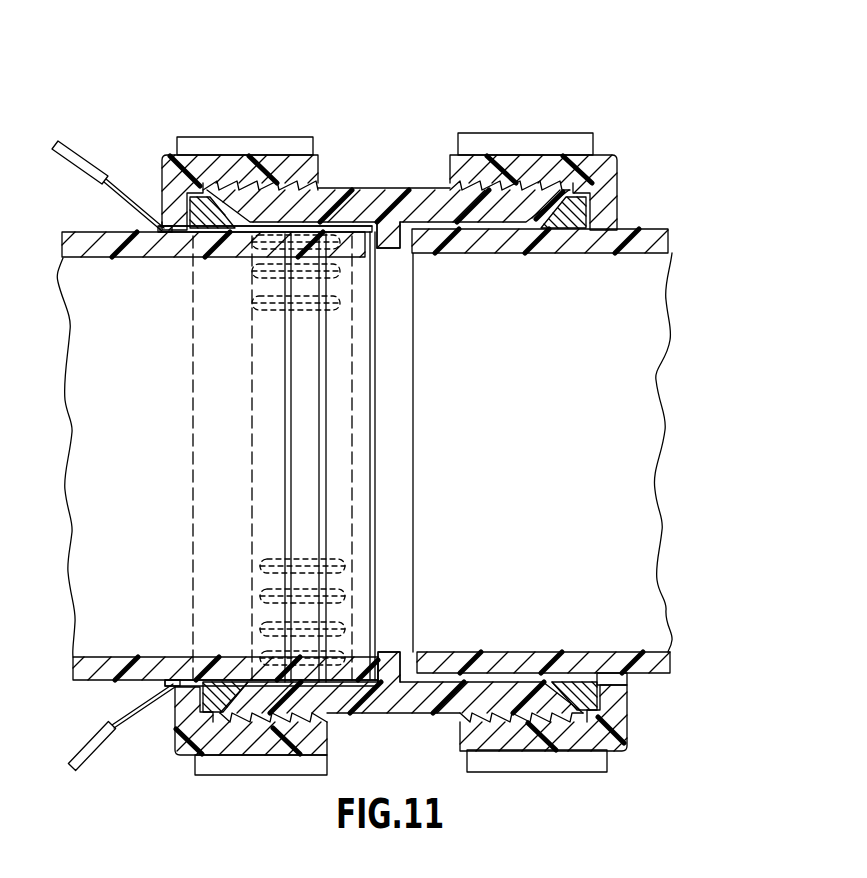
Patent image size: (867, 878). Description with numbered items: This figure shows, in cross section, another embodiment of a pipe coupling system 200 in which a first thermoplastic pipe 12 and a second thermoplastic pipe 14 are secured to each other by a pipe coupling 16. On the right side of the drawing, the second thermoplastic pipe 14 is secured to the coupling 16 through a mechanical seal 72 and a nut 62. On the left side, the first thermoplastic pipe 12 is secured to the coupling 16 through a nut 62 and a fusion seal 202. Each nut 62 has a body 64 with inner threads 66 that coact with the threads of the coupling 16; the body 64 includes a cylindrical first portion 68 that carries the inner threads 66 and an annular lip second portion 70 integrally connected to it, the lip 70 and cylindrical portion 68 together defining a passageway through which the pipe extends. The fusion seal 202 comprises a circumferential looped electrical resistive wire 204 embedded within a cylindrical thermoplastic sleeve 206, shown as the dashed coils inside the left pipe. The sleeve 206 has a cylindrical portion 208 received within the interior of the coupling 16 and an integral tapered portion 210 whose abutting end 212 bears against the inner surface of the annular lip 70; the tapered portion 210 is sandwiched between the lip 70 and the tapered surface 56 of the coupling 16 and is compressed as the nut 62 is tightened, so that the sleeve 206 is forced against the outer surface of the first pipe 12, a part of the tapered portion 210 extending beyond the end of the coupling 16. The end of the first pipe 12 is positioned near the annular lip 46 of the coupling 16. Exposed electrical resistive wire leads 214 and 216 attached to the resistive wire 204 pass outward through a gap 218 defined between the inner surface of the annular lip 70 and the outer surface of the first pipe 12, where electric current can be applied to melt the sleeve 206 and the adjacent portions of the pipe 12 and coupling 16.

The pipe coupling system 200 is at (243, 82).
The first thermoplastic pipe 12 is at (78, 232).
The second thermoplastic pipe 14 is at (648, 229).
The pipe coupling 16 is at (390, 187).
The annular lip 46 is at (392, 250).
The tapered surface 56 is at (232, 230).
The nut 62 is at (297, 137).
The body 64 is at (247, 137).
The inner threads 66 is at (314, 184).
The cylindrical first portion 68 is at (163, 158).
The annular lip second portion 70 is at (158, 206).
The mechanical seal 72 is at (612, 158).
The fusion seal 202 is at (213, 680).
The electrical resistive wire 204 is at (358, 580).
The cylindrical thermoplastic sleeve 206 is at (358, 645).
The cylindrical portion 208 is at (358, 612).
The tapered portion 210 is at (200, 220).
The abutting end 212 is at (175, 712).
The electrical resistive wire lead 214 is at (122, 722).
The electrical resistive wire lead 216 is at (110, 168).
The gap 218 is at (163, 232).